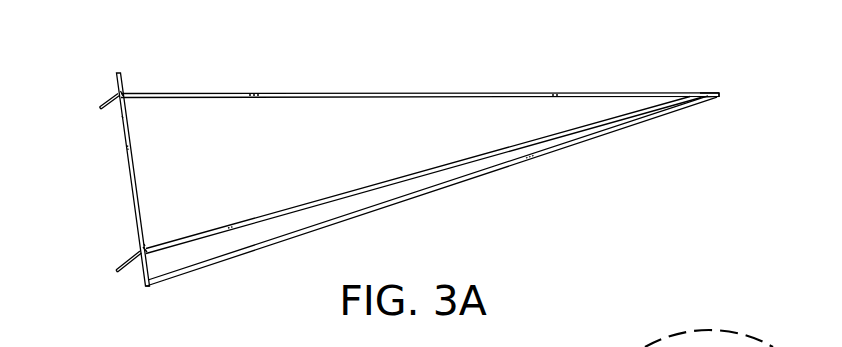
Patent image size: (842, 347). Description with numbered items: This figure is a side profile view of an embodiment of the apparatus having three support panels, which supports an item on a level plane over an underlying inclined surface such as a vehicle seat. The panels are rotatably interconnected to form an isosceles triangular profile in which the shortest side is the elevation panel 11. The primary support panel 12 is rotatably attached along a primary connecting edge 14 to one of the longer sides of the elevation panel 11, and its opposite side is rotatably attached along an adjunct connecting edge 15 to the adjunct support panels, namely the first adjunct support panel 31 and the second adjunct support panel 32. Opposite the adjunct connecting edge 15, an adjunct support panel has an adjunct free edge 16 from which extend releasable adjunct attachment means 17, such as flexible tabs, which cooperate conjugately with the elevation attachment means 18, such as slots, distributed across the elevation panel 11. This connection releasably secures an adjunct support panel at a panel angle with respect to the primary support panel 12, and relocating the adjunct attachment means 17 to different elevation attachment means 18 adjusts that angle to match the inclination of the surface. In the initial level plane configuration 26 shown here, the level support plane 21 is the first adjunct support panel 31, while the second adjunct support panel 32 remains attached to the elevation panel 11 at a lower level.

The elevation panel 11 is at (117, 168).
The primary support panel 12 is at (468, 186).
The primary connecting edge 14 is at (146, 287).
The adjunct connecting edge 15 is at (720, 95).
The adjunct free edge 16 is at (123, 94).
The adjunct attachment means 17 is at (99, 107).
The elevation attachment means 18 is at (111, 117).
The level support plane 21 is at (413, 89).
The level plane configuration 26 is at (661, 164).
The first adjunct support panel 31 is at (504, 91).
The second adjunct support panel 32 is at (426, 167).